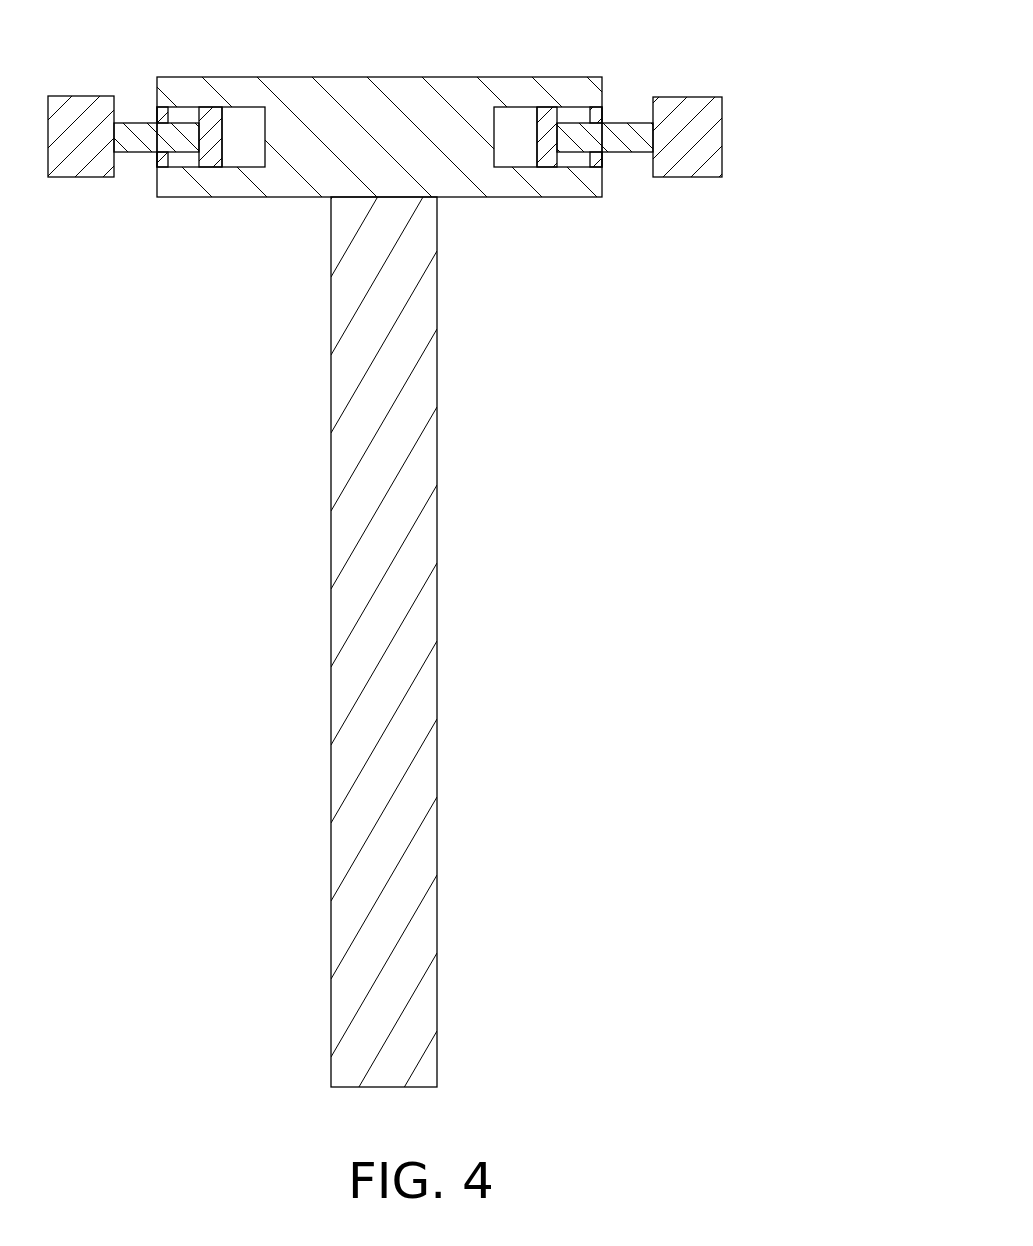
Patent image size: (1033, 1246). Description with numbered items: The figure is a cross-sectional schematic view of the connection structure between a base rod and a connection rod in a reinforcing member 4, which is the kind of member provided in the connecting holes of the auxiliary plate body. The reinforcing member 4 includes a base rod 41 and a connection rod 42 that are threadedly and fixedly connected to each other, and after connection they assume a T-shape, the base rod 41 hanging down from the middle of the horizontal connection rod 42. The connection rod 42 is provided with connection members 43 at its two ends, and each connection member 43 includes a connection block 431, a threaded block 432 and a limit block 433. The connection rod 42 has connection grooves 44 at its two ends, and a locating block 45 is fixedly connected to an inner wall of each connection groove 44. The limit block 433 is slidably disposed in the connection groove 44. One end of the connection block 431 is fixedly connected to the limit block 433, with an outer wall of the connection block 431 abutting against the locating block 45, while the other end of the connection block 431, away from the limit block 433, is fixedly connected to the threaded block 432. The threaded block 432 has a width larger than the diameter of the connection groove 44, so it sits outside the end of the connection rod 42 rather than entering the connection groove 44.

The reinforcing member 4 is at (610, 353).
The base rod 41 is at (417, 323).
The connection rod 42 is at (462, 182).
The connection member 43 is at (451, 200).
The connection block 431 is at (609, 142).
The threaded block 432 is at (697, 160).
The limit block 433 is at (545, 148).
The connection groove 44 is at (517, 120).
The locating block 45 is at (596, 115).